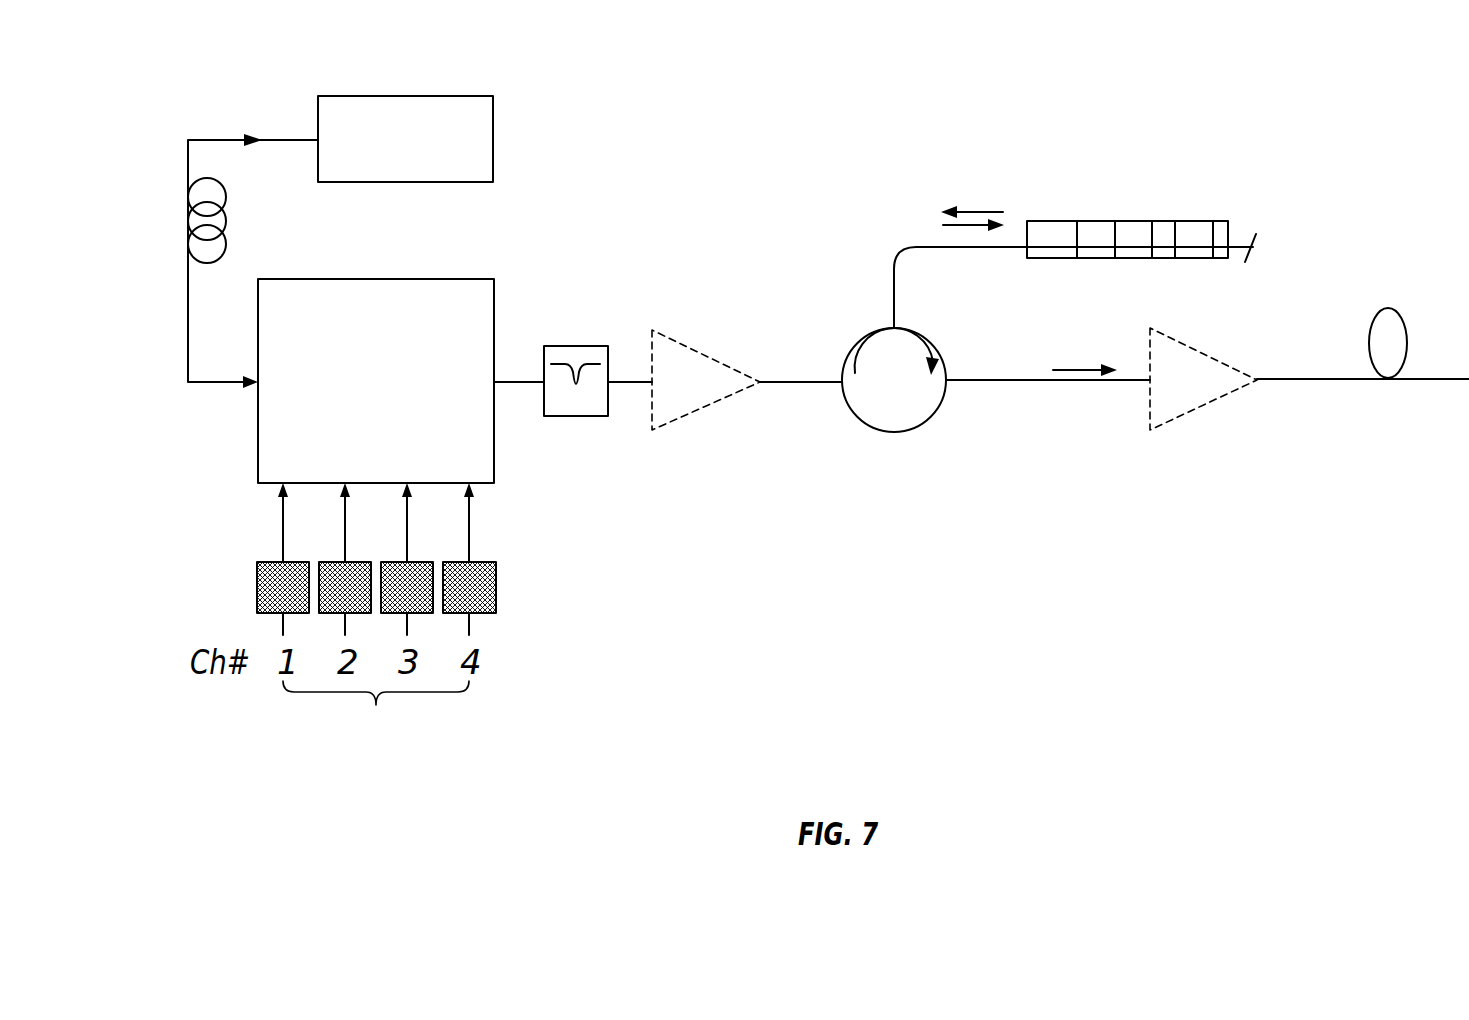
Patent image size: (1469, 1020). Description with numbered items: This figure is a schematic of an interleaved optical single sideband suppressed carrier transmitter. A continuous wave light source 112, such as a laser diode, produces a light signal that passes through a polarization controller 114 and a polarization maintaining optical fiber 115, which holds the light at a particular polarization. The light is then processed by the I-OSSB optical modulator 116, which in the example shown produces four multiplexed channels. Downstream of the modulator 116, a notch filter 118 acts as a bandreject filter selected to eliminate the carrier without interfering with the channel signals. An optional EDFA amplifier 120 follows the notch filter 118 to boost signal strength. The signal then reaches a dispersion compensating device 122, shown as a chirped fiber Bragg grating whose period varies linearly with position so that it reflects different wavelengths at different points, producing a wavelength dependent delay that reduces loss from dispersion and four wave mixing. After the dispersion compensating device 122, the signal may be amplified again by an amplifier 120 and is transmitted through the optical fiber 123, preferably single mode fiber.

The continuous wave light source 112 is at (429, 158).
The polarization controller 114 is at (227, 220).
The polarization maintaining optical fiber 115 is at (187, 338).
The I-OSSB optical modulator 116 is at (398, 399).
The notch filter 118 is at (591, 346).
The EDFA amplifier 120 is at (687, 342).
The dispersion compensating device 122 is at (880, 432).
The optical fiber 123 is at (1303, 379).